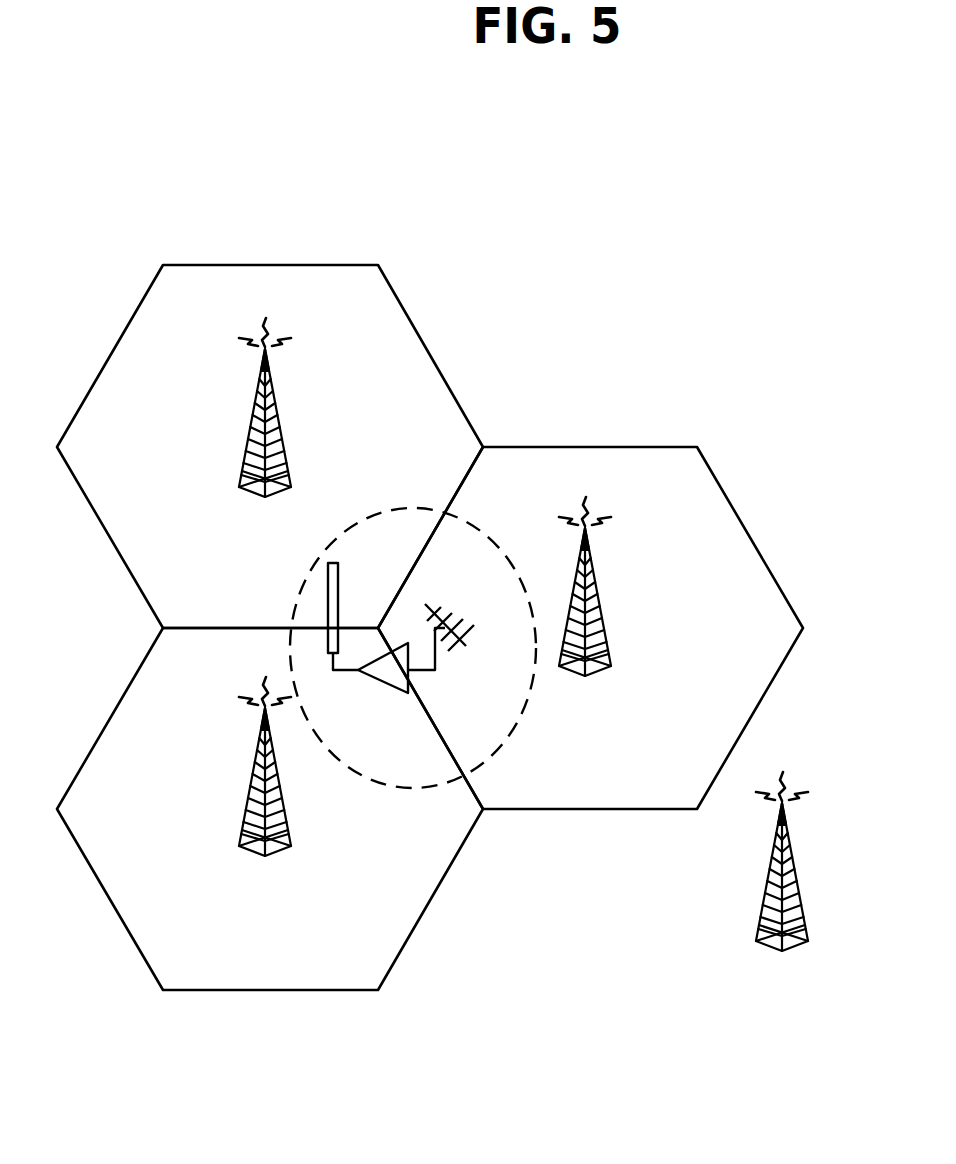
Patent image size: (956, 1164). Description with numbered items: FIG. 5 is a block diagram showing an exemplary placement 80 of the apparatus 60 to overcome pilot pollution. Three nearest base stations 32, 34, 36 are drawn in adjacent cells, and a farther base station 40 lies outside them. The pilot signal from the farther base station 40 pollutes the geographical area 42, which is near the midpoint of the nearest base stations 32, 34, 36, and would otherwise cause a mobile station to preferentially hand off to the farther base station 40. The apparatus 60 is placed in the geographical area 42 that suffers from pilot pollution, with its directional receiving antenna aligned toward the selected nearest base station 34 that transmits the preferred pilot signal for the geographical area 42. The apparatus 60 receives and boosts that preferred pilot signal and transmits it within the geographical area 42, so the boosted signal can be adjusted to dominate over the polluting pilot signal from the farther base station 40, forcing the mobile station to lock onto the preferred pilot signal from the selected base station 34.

The exemplary placement 80 is at (746, 272).
The nearest base station 32 is at (265, 784).
The selected nearest base station 34 is at (585, 604).
The nearest base station 36 is at (265, 424).
The farther base station 40 is at (782, 875).
The geographical area 42 is at (513, 727).
The apparatus 60 is at (396, 689).